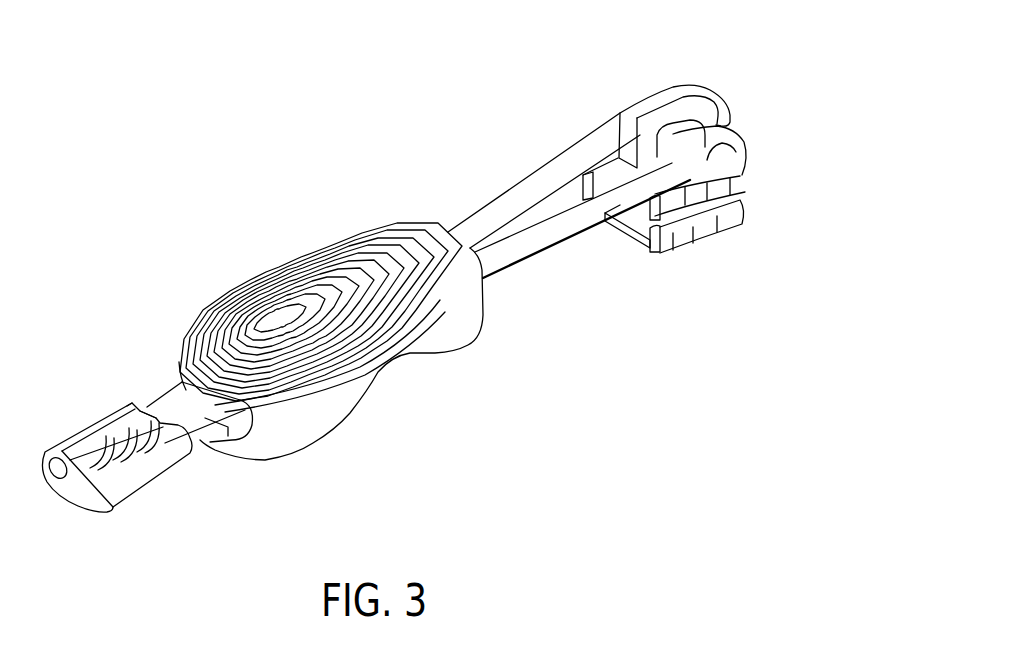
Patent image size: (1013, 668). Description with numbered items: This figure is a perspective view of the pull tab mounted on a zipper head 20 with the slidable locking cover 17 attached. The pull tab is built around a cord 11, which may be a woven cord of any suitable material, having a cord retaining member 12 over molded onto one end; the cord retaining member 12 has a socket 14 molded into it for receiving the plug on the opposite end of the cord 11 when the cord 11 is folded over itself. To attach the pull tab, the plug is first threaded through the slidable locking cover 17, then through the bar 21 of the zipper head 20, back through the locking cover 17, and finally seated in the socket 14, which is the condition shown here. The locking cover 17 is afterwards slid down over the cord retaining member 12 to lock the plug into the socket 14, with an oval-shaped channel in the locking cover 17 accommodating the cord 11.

The cord 11 is at (542, 240).
The cord retaining member 12 is at (145, 473).
The socket 14 is at (117, 417).
The slidable locking cover 17 is at (352, 372).
The zipper head 20 is at (738, 136).
The bar 21 is at (675, 100).